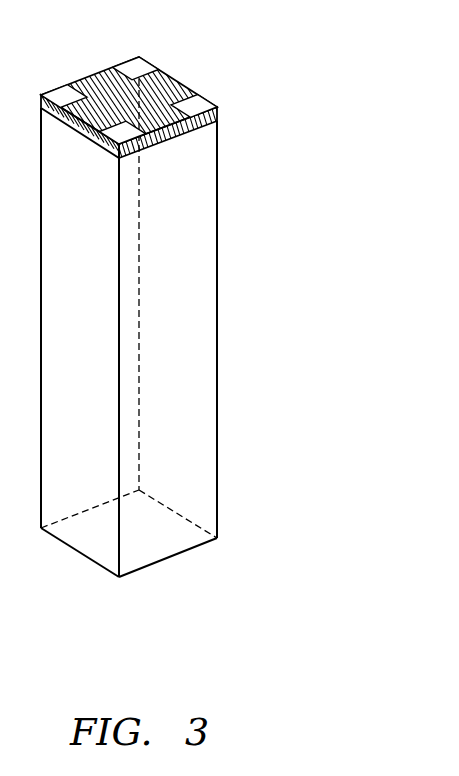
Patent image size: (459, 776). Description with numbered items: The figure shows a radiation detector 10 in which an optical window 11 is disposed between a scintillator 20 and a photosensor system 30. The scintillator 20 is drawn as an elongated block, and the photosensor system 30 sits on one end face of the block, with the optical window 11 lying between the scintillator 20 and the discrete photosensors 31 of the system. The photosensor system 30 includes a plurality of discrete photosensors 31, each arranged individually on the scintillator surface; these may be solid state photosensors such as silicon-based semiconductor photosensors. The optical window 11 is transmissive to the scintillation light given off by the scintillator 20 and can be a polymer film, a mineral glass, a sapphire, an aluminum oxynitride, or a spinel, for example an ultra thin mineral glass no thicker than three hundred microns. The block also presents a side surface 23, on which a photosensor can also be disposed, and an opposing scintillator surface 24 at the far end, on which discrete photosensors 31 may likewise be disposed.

The radiation detector 10 is at (213, 301).
The scintillator 20 is at (168, 323).
The side surface 23 is at (217, 308).
The scintillator surface 24 is at (83, 540).
The photosensor system 30 is at (144, 85).
The discrete photosensor 31 is at (203, 103).
The optical window 11 is at (102, 82).